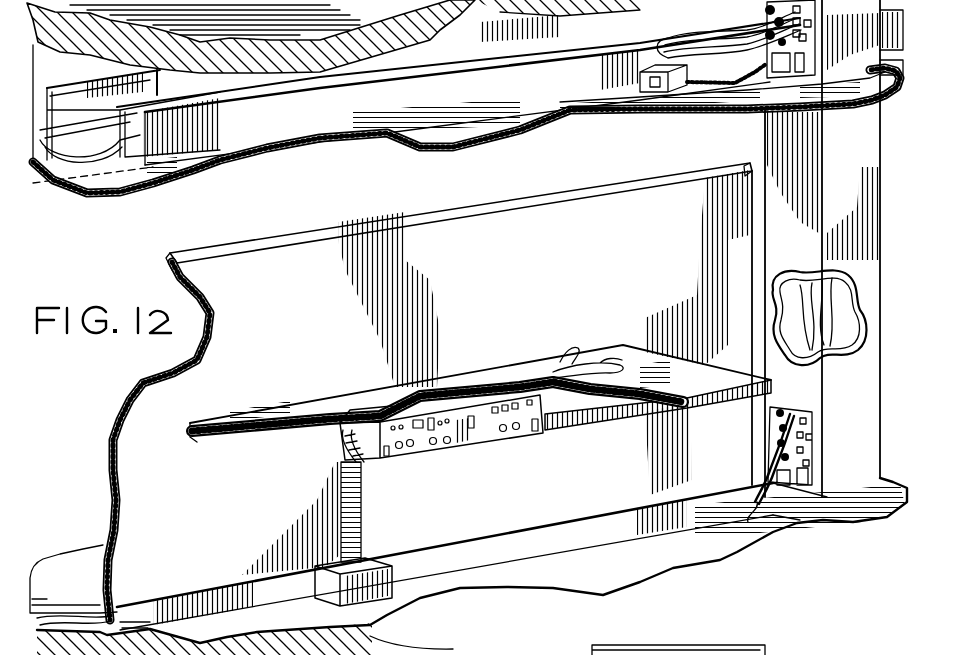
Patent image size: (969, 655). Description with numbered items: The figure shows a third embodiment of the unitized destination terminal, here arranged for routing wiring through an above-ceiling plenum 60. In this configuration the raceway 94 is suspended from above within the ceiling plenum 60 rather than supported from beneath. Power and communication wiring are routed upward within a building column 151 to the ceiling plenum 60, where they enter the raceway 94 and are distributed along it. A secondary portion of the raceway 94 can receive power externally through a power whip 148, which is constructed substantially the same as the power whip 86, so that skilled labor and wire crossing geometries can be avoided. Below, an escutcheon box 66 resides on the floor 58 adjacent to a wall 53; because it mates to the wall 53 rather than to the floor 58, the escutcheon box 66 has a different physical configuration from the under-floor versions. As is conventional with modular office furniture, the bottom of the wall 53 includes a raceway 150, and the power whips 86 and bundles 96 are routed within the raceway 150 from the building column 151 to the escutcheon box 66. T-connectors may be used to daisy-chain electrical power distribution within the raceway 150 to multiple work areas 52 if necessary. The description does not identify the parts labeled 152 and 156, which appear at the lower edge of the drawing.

The work area 52 is at (308, 432).
The wall 53 is at (288, 259).
The floor 58 is at (503, 565).
The ceiling plenum 60 is at (508, 103).
The escutcheon box 66 is at (393, 604).
The power whip 86 is at (763, 505).
The raceway 94 is at (301, 130).
The bundles 96 is at (668, 47).
The power whip 148 is at (710, 105).
The raceway 150 is at (597, 524).
The building column 151 is at (853, 480).
The base cover 152 is at (722, 637).
The connector 156 is at (597, 644).